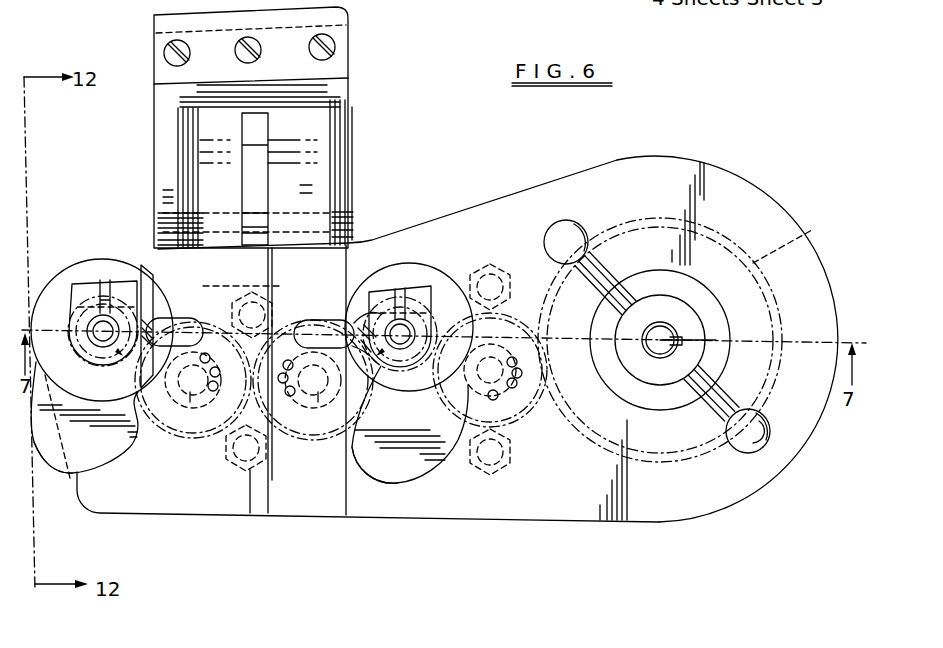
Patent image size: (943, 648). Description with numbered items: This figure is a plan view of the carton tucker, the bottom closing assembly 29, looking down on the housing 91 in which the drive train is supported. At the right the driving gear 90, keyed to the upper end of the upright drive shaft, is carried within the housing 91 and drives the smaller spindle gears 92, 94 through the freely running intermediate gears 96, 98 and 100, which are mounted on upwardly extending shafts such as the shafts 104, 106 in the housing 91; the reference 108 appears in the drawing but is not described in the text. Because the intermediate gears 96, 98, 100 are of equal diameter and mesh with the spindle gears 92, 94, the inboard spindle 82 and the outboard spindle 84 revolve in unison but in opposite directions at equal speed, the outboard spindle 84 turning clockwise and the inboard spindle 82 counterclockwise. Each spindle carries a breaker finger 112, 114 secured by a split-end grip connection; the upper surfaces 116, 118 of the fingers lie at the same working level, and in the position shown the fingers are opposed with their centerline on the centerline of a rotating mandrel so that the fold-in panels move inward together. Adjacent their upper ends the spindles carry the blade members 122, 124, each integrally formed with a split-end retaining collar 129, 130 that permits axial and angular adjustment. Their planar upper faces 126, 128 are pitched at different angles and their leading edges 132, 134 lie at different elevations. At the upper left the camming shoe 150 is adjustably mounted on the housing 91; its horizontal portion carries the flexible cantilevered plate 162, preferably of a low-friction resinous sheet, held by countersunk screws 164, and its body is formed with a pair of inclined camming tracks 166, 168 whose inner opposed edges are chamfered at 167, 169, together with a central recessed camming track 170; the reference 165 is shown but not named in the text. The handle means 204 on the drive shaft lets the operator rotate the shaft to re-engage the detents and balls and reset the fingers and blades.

The bottom closing assembly 29 is at (467, 203).
The inboard spindle 82 is at (102, 302).
The outboard spindle 84 is at (414, 298).
The driving gear 90 is at (813, 227).
The housing 91 is at (758, 183).
The spindle gear 92 is at (103, 280).
The spindle gear 94 is at (435, 305).
The intermediate gear 96 is at (197, 408).
The intermediate gear 98 is at (300, 410).
The intermediate gear 100 is at (537, 450).
The shaft 104 is at (199, 410).
The shaft 106 is at (317, 408).
The third gear hub 108 is at (542, 430).
The breaker finger 112 is at (166, 313).
The breaker finger 114 is at (333, 316).
The upper surface of breaker finger 116 is at (187, 337).
The upper surface of breaker finger 118 is at (317, 313).
The blade member 122 is at (63, 476).
The blade member 124 is at (425, 478).
The upper surface of blade 126 is at (107, 448).
The upper surface of blade 128 is at (400, 473).
The retaining collar 129 is at (88, 290).
The retaining collar 130 is at (377, 289).
The leading edge of blade 132 is at (128, 441).
The leading edge of blade 134 is at (357, 447).
The camming shoe 150 is at (257, 131).
The flexible cantilevered plate 162 is at (157, 29).
The countersunk screws 164 is at (327, 47).
The coil flange 165 is at (157, 255).
The camming track 166 is at (177, 161).
The chamfered edge 167 is at (185, 127).
The camming track 168 is at (350, 192).
The chamfered edge 169 is at (333, 118).
The central recessed camming track 170 is at (260, 181).
The handle means 204 is at (573, 230).